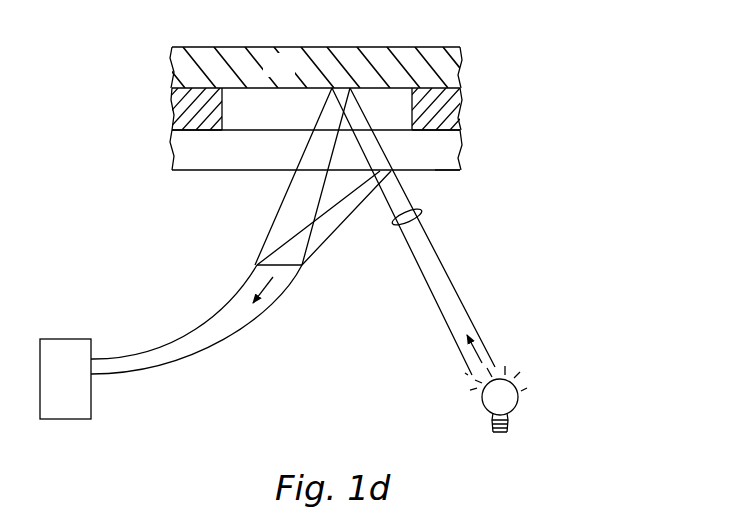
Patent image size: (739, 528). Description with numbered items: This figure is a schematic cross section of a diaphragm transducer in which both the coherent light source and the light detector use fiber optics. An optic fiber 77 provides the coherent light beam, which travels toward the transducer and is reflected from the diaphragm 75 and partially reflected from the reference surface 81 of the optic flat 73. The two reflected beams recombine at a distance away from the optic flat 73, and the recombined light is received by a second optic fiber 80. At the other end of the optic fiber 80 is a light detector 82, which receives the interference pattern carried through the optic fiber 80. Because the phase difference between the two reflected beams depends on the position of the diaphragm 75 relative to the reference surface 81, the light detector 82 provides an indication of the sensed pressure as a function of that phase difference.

The diaphragm 75 is at (292, 77).
The optic flat 73 is at (468, 144).
The reference surface 81 is at (435, 170).
The optic fiber 77 is at (458, 277).
The optic fiber 80 is at (238, 348).
The light detector 82 is at (79, 389).